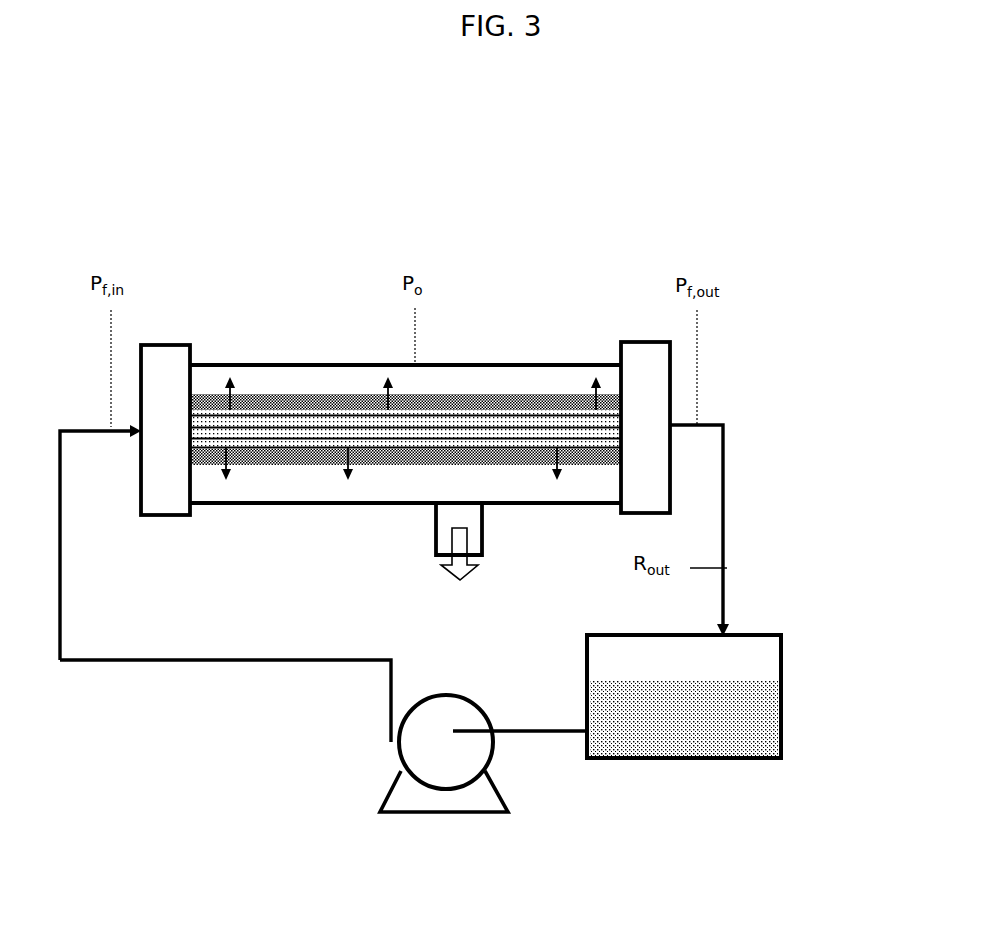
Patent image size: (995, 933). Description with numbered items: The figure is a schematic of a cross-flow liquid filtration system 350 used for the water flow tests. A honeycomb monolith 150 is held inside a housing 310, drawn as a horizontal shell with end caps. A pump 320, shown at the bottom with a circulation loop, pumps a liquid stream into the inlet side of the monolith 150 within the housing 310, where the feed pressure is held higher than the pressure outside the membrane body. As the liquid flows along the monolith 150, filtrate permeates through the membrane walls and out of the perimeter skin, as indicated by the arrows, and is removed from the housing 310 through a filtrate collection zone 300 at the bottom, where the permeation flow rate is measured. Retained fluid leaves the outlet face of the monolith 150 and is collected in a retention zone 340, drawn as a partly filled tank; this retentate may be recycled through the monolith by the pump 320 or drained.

The honeycomb monolith 150 is at (348, 402).
The filtrate collection zone 300 is at (462, 577).
The housing 310 is at (273, 365).
The pump 320 is at (403, 772).
The retention zone 340 is at (771, 705).
The liquid filtration system 350 is at (567, 332).